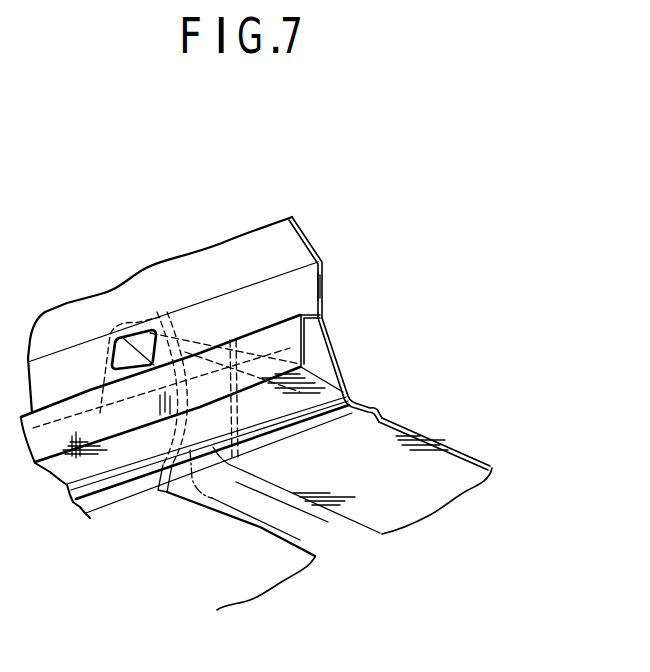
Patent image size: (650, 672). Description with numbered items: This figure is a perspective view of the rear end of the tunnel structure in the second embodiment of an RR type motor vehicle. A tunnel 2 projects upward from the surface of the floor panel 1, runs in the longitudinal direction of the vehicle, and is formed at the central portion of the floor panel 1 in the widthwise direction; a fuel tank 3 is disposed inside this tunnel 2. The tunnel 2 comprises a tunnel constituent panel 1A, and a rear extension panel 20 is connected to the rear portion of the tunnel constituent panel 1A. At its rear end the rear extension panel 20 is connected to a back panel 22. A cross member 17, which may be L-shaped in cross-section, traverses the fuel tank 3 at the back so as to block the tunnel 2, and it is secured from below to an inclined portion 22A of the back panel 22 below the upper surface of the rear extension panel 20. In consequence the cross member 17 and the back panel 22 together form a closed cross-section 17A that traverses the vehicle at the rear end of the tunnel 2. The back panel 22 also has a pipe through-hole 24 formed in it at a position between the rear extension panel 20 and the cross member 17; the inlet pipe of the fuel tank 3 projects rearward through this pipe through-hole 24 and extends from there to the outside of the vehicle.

The floor panel 1 is at (460, 448).
The tunnel constituent panel 1A is at (264, 346).
The tunnel 2 is at (370, 540).
The fuel tank 3 is at (224, 523).
The cross member 17 is at (333, 378).
The closed cross-section 17A is at (323, 360).
The rear extension panel 20 is at (190, 328).
The back panel 22 is at (313, 244).
The inclined portion 22A is at (330, 326).
The pipe through-hole 24 is at (130, 338).